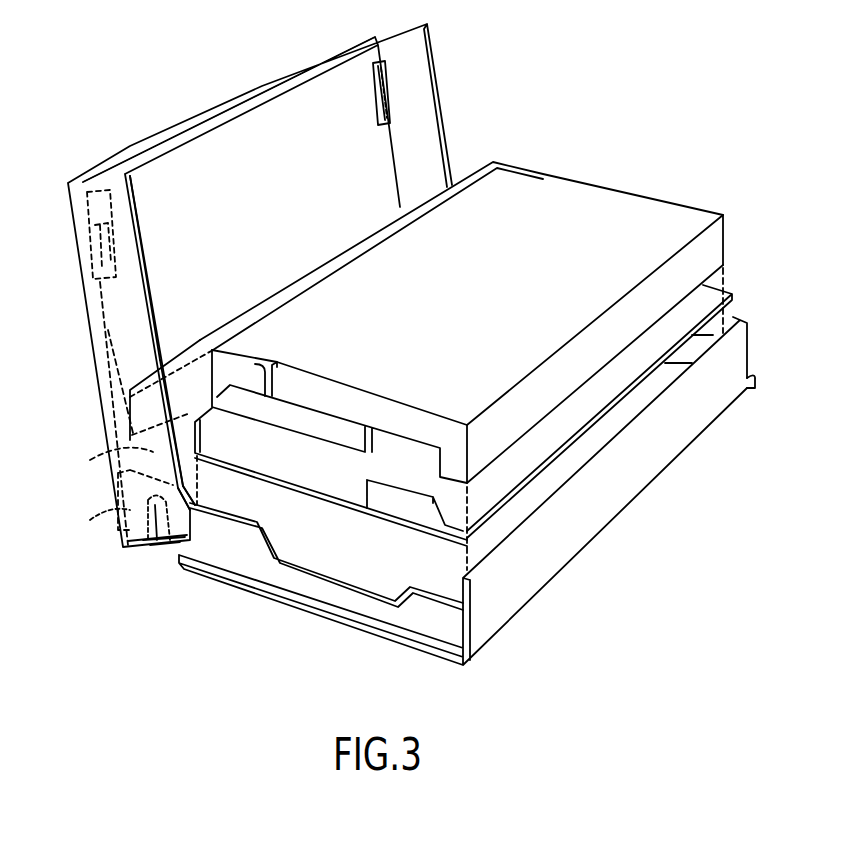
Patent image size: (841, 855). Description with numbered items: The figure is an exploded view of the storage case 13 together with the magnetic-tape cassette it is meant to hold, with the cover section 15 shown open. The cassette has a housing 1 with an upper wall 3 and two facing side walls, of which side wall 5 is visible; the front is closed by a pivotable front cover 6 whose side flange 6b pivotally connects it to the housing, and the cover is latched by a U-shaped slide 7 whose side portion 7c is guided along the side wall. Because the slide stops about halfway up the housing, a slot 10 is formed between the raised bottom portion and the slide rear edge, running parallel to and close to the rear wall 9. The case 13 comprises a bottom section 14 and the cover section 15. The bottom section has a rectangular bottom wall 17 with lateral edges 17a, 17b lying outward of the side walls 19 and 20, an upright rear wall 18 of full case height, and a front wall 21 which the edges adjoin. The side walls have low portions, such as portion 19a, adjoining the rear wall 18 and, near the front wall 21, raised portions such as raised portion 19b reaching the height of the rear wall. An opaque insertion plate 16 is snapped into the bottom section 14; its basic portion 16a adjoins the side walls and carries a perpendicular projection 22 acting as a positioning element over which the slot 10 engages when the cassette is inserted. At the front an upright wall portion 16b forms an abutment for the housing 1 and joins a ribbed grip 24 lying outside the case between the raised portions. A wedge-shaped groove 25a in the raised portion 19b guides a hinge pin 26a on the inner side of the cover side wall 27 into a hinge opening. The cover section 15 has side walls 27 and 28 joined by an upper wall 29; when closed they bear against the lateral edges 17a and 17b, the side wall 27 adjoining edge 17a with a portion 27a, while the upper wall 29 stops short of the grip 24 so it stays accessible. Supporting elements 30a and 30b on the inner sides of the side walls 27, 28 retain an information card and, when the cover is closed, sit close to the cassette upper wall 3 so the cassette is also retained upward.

The housing 1 is at (665, 192).
The upper wall 3 is at (568, 222).
The side wall 5 is at (397, 415).
The front cover 6 is at (303, 290).
The side flange 6b is at (240, 367).
The U-shaped slide 7 is at (290, 407).
The side portion 7c is at (337, 430).
The rear wall 9 is at (540, 385).
The slot 10 is at (410, 447).
The storage case 13 is at (572, 546).
The bottom section 14 is at (515, 580).
The cover section 15 is at (117, 425).
The insertion plate 16 is at (332, 482).
The basic portion 16a is at (267, 450).
The upright wall portion 16b is at (210, 418).
The bottom wall 17 is at (320, 560).
The lateral edge 17a is at (442, 647).
The lateral edge 17b is at (757, 380).
The rear wall 18 is at (660, 455).
The side wall 19 is at (390, 645).
The portion 19a is at (347, 600).
The raised portion 19b is at (116, 470).
The side wall 20 is at (693, 350).
The front wall 21 is at (200, 473).
The projection 22 is at (400, 510).
The grip 24 is at (172, 360).
The wedge-shaped groove 25a is at (153, 548).
The hinge pin 26a is at (142, 515).
The side wall 27 is at (125, 290).
The portion 27a is at (178, 527).
The side wall 28 is at (424, 108).
The upper wall 29 is at (196, 118).
The supporting element 30a is at (90, 243).
The supporting element 30b is at (392, 76).